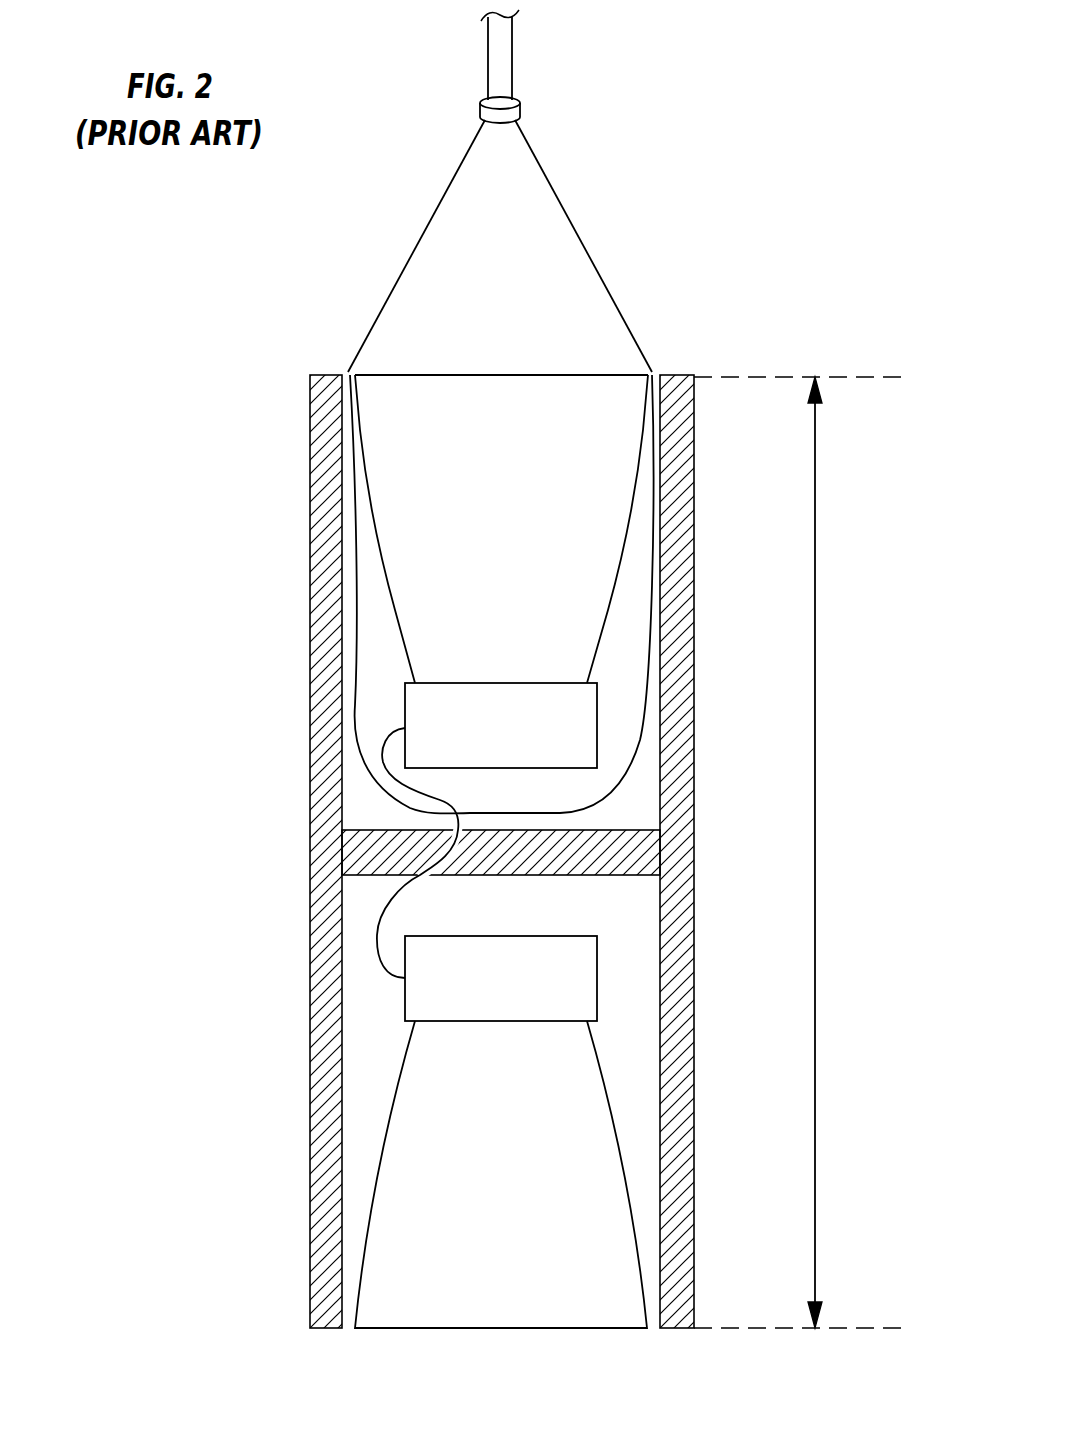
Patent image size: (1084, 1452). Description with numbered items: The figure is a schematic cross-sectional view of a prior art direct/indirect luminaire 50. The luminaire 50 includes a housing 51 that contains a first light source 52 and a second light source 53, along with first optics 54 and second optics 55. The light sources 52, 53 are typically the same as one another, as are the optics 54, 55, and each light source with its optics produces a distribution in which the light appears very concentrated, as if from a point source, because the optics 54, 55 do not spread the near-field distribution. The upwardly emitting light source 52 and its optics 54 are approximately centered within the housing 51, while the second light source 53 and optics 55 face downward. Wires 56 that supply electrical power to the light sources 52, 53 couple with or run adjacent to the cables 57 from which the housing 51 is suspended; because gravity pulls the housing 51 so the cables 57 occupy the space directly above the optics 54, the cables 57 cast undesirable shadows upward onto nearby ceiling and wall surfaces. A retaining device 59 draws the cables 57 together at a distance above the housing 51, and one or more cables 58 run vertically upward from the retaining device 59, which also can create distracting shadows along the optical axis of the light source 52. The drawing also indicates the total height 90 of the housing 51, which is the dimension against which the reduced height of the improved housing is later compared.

The luminaire 50 is at (770, 248).
The housing 51 is at (693, 850).
The first light source 52 is at (597, 718).
The second light source 53 is at (597, 978).
The first optics 54 is at (603, 620).
The second optics 55 is at (617, 1110).
The wires 56 is at (617, 785).
The cables 57 is at (415, 245).
The cable 58 is at (487, 50).
The retaining device 59 is at (482, 108).
The total height 90 is at (815, 882).